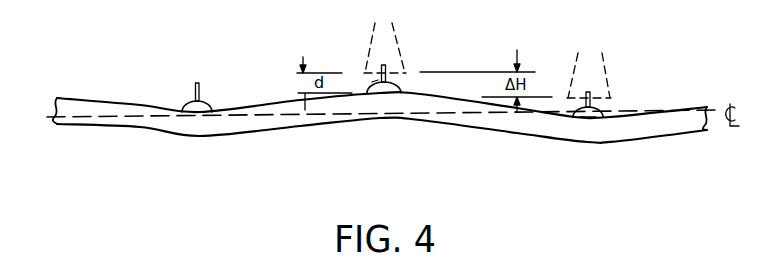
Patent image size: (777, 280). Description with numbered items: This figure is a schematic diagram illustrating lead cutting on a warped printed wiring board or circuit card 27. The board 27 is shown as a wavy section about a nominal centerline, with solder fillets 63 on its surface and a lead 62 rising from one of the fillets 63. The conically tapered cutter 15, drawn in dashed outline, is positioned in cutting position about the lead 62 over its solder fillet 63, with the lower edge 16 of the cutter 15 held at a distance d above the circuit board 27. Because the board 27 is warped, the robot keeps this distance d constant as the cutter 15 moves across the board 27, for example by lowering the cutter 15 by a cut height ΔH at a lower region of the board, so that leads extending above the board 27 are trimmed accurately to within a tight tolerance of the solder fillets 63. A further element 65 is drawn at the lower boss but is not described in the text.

The cutter 15 is at (393, 48).
The lower edge 16 is at (393, 78).
The circuit board 27 is at (103, 100).
The lead 62 is at (378, 80).
The solder fillet 63 is at (208, 103).
The boss on low region 65 is at (593, 117).